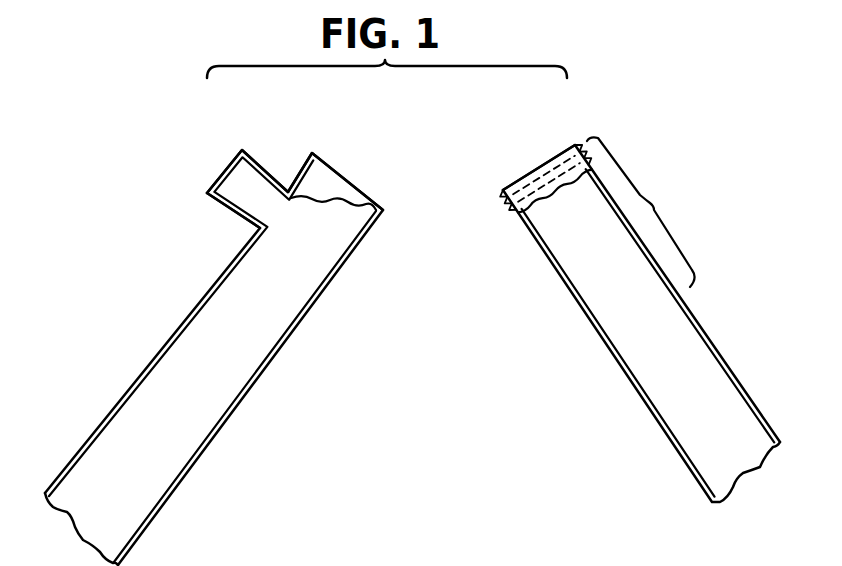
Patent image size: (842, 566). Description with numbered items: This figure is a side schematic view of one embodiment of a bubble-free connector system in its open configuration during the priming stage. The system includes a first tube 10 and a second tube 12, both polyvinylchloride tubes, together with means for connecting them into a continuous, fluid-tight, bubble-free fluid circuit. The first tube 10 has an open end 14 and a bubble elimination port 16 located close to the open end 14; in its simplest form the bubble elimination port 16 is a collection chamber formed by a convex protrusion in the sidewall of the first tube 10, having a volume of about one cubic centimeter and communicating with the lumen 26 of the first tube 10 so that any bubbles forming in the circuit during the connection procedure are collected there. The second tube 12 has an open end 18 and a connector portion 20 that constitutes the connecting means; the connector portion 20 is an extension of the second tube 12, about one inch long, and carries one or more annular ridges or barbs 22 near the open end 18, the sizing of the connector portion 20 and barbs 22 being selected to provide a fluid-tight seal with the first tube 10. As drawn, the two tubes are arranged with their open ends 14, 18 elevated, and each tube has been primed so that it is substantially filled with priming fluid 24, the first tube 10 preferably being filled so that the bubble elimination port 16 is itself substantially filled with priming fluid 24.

The first tube 10 is at (272, 362).
The second tube 12 is at (605, 347).
The open end 14 is at (326, 142).
The bubble elimination port 16 is at (228, 140).
The open end 18 is at (540, 140).
The connector portion 20 is at (641, 212).
The barbs 22 is at (499, 216).
The priming fluid 24 is at (352, 182).
The lumen 26 is at (322, 254).